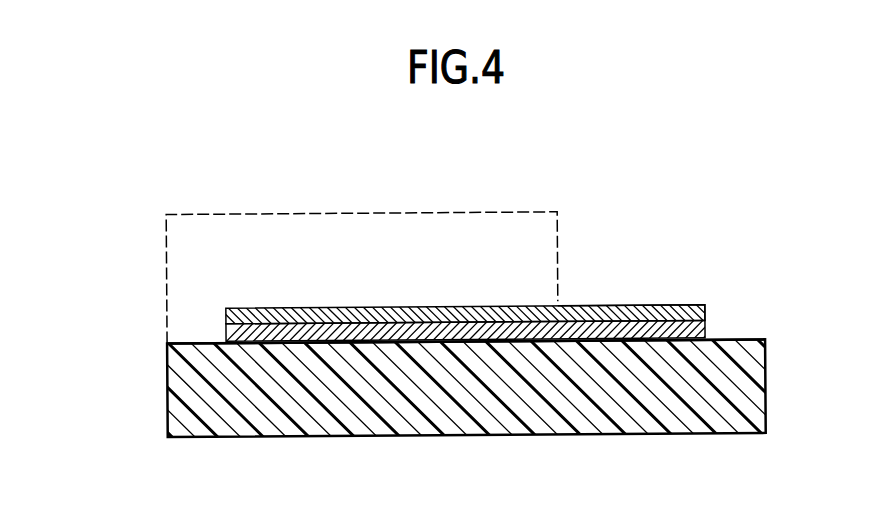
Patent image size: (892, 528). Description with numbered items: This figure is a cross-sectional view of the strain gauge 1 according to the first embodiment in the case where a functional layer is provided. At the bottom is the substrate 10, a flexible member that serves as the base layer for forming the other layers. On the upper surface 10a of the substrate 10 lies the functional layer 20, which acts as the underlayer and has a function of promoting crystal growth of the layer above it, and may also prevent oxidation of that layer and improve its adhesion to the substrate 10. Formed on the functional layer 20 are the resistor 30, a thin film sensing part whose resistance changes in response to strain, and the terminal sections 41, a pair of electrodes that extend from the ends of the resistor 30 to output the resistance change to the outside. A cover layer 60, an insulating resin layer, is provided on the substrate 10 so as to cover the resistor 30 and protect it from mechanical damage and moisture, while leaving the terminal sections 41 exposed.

The strain gauge 1 is at (114, 194).
The substrate 10 is at (183, 382).
The upper surface of the substrate 10a is at (198, 343).
The functional layer 20 is at (232, 335).
The resistor 30 is at (553, 298).
The terminal sections 41 is at (703, 297).
The cover layer 60 is at (456, 211).